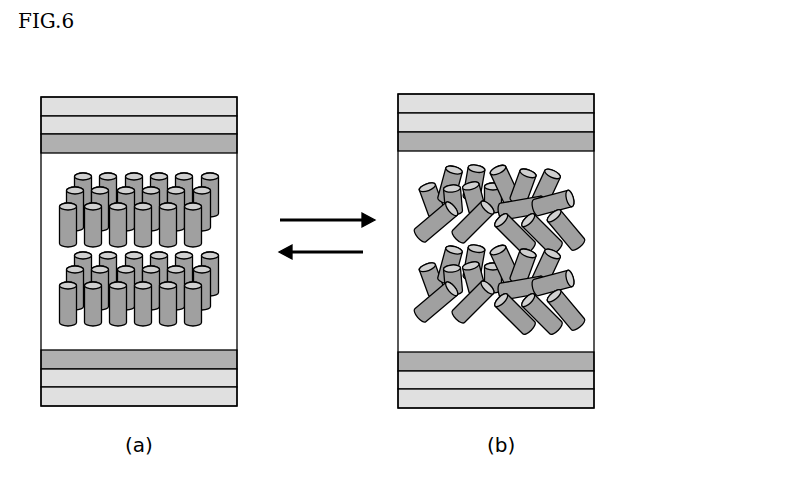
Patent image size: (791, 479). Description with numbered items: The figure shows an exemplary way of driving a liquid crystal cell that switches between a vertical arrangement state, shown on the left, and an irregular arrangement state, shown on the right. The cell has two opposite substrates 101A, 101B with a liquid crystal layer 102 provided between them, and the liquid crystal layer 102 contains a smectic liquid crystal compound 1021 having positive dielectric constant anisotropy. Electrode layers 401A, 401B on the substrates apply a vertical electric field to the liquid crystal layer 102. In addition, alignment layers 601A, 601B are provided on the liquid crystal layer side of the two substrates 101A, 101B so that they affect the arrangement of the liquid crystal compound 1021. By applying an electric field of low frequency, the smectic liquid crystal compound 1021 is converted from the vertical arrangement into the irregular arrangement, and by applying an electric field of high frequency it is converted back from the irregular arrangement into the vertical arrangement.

The substrate 101A is at (594, 98).
The electrode layer 401A is at (594, 117).
The alignment layer 601A is at (594, 145).
The liquid crystal layer 102 is at (581, 249).
The smectic liquid crystal compound 1021 is at (572, 247).
The alignment layer 601B is at (594, 359).
The substrate 101B is at (594, 378).
The electrode layer 401B is at (594, 406).